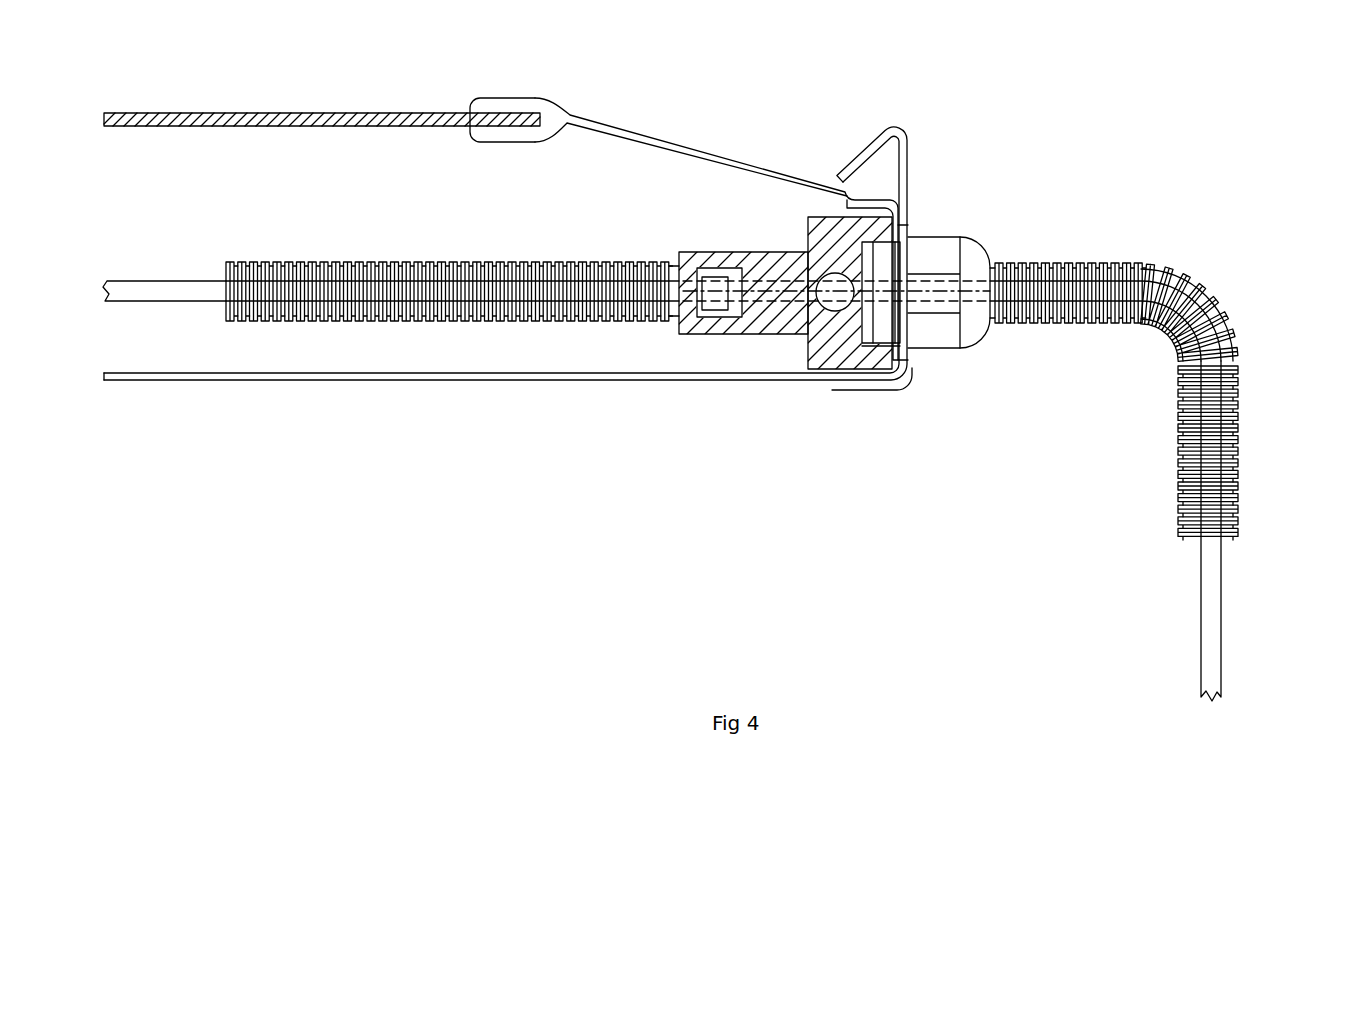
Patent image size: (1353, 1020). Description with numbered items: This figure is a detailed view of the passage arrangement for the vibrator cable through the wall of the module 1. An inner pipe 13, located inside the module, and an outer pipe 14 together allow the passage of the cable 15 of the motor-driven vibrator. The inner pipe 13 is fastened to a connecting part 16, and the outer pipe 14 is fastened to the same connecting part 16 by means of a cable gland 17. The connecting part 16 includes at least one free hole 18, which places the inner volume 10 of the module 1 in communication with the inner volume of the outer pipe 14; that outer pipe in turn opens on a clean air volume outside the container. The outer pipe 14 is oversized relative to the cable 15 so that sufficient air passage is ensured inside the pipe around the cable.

The module 1 is at (455, 395).
The inner volume 10 is at (385, 185).
The inner pipe 13 is at (642, 260).
The outer pipe 14 is at (1145, 268).
The cable 15 is at (1229, 572).
The connecting part 16 is at (758, 250).
The cable gland 17 is at (963, 237).
The free hole 18 is at (832, 298).